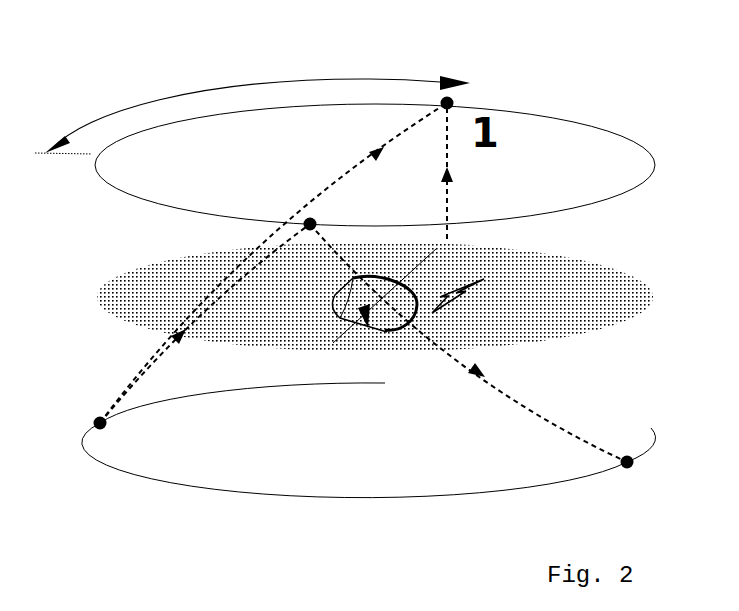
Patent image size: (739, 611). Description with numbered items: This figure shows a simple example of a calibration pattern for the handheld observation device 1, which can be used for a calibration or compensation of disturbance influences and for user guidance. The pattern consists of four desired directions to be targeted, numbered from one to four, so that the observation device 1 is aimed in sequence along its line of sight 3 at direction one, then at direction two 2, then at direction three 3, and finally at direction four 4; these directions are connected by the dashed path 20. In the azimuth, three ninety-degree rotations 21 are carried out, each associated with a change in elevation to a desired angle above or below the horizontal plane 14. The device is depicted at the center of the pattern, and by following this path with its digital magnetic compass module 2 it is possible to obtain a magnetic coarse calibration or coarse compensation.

The handheld observation device 1 is at (417, 292).
The digital magnetic compass module 2 is at (85, 421).
The line of sight 3 is at (335, 215).
The desired direction 4 is at (651, 460).
The horizontal plane 14 is at (550, 317).
The dashed path 20 is at (452, 193).
The 90° rotations 21 is at (157, 93).